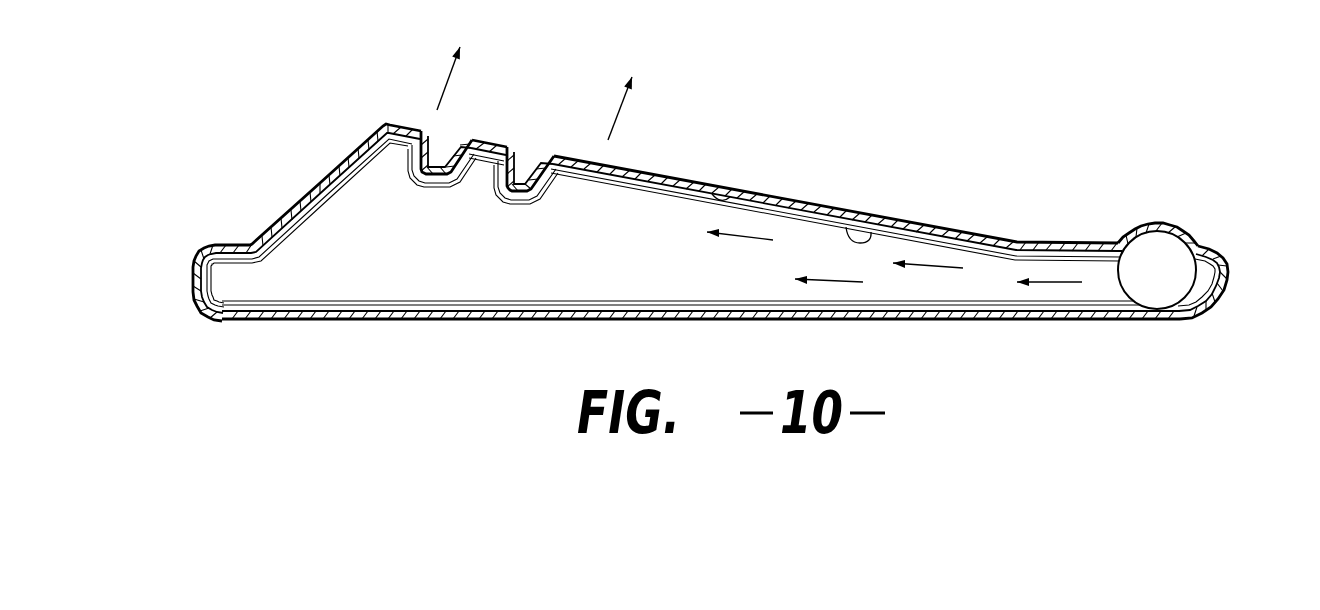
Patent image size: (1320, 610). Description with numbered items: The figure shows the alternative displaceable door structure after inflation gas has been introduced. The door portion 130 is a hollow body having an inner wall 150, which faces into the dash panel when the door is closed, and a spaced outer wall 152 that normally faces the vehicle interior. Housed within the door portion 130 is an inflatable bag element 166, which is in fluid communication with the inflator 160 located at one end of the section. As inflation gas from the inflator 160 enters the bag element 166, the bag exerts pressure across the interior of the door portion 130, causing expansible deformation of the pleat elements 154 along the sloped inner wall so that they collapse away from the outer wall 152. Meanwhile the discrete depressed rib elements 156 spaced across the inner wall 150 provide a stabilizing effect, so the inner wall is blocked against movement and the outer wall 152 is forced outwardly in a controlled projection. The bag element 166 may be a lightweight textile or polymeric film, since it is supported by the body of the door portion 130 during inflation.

The door portion 130 is at (903, 99).
The inner wall 150 is at (742, 193).
The outer wall 152 is at (828, 322).
The pleat elements 154 is at (333, 168).
The depressed rib elements 156 is at (442, 150).
The inflator 160 is at (1157, 248).
The inflatable bag element 166 is at (863, 240).